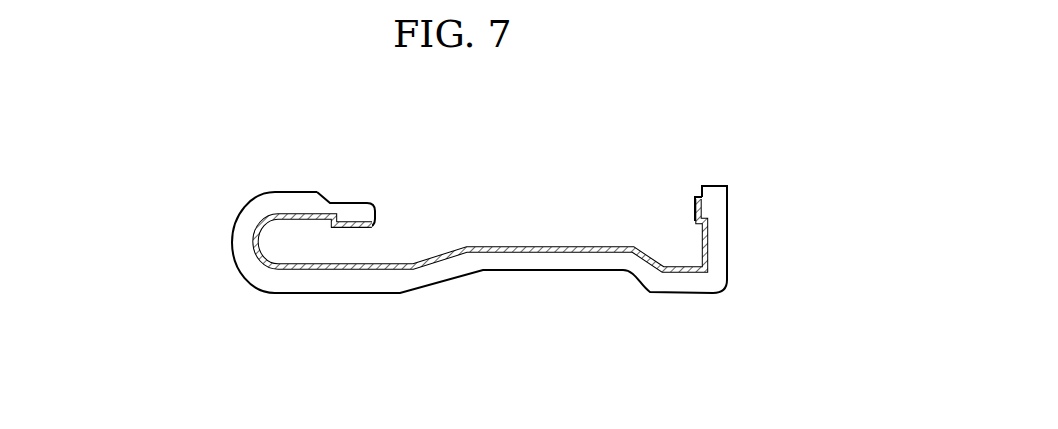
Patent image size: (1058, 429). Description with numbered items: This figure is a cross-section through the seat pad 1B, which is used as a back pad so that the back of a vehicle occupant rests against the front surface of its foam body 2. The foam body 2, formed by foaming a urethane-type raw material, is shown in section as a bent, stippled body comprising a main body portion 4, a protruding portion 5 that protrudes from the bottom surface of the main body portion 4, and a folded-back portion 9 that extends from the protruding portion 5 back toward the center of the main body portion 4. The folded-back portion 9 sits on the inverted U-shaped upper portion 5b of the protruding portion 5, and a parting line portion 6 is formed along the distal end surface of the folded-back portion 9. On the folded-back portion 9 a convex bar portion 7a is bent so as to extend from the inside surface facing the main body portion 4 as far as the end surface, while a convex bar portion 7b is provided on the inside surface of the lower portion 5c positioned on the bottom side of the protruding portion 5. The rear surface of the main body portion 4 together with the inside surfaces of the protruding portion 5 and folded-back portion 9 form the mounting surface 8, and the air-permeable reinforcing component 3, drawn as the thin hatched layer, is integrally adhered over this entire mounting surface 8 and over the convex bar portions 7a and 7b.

The seat pad 1B is at (775, 124).
The foam body 2 is at (133, 151).
The reinforcing component 3 is at (573, 254).
The main body portion 4 is at (287, 283).
The protruding portion 5 is at (233, 240).
The upper portion 5b is at (233, 248).
The lower portion 5c is at (717, 242).
The parting line portion 6 is at (372, 212).
The convex bar portion 7a is at (373, 219).
The convex bar portion 7b is at (696, 195).
The mounting surface 8 is at (553, 247).
The folded-back portion 9 is at (300, 195).